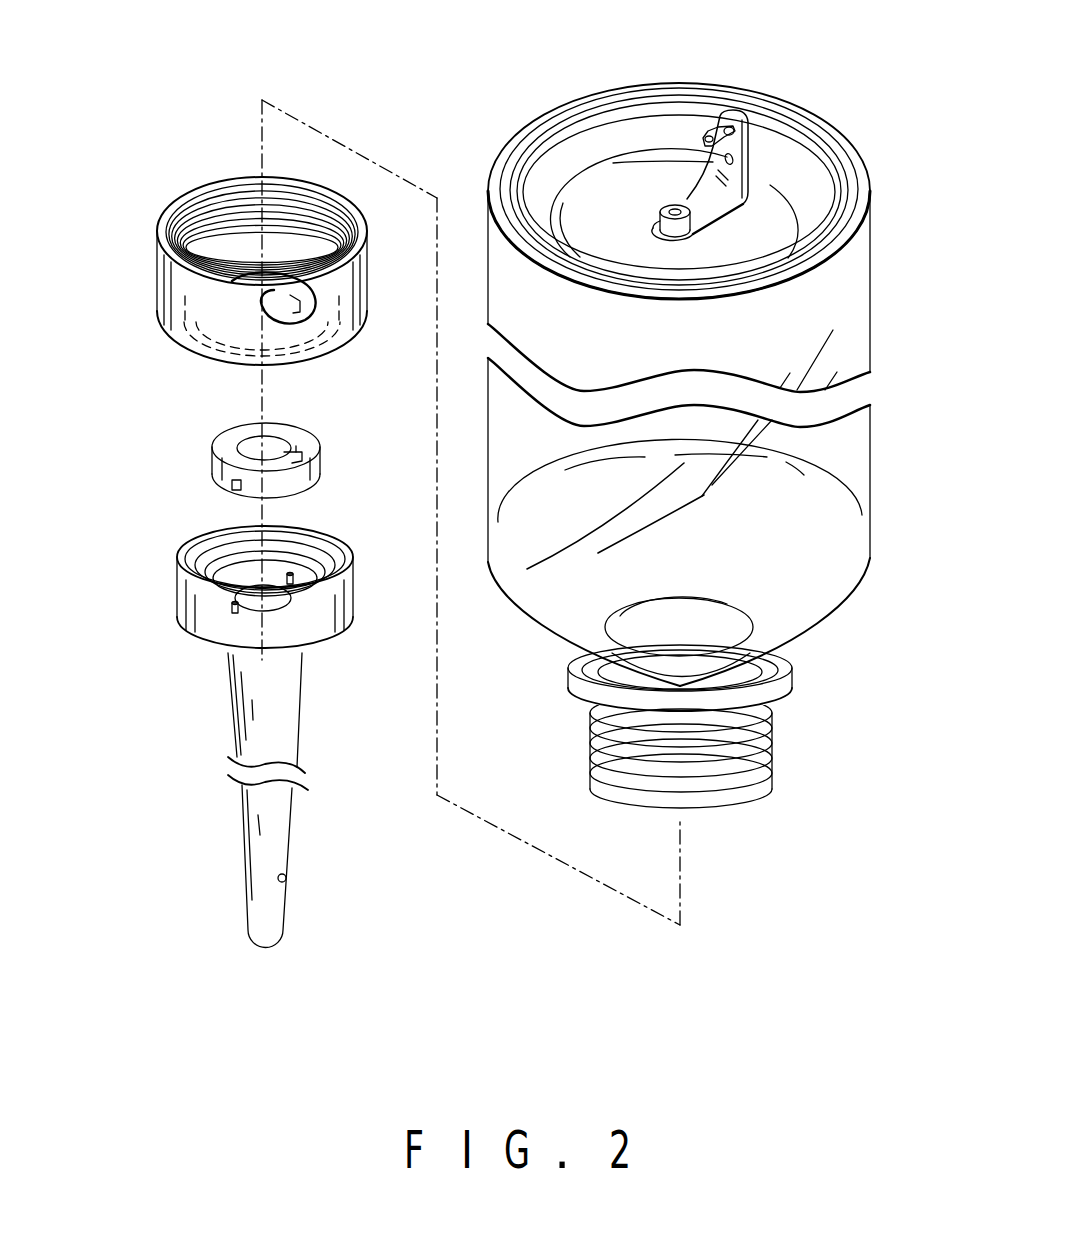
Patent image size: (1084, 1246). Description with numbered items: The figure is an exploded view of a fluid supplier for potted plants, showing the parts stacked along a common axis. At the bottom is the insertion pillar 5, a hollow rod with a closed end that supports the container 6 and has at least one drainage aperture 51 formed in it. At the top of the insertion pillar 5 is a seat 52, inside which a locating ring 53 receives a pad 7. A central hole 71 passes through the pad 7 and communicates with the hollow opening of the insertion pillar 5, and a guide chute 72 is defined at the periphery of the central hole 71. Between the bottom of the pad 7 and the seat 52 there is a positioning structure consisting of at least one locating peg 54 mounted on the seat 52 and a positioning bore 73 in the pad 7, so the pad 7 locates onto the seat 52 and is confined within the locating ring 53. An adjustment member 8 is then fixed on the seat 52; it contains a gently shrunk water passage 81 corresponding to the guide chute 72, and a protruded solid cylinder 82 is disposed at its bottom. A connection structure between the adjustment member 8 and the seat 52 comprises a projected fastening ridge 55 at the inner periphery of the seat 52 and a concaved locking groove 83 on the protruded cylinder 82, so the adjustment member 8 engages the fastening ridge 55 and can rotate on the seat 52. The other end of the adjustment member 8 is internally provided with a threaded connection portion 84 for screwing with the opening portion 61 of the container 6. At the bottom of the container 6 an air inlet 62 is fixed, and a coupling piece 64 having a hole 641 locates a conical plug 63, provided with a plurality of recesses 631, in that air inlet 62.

The insertion pillar 5 is at (257, 700).
The drainage aperture 51 is at (287, 877).
The seat 52 is at (189, 613).
The locating ring 53 is at (216, 575).
The locating peg 54 is at (296, 576).
The fastening ridge 55 is at (219, 547).
The container 6 is at (856, 307).
The opening portion 61 is at (714, 773).
The air inlet 62 is at (675, 212).
The conical plug 63 is at (711, 134).
The recesses 631 is at (728, 141).
The coupling piece 64 is at (718, 203).
The hole 641 is at (733, 160).
The pad 7 is at (226, 458).
The central hole 71 is at (253, 447).
The guide chute 72 is at (306, 473).
The positioning bore 73 is at (209, 481).
The adjustment member 8 is at (158, 272).
The water passage 81 is at (292, 300).
The protruded solid cylinder 82 is at (327, 350).
The locking groove 83 is at (290, 352).
The threaded connection portion 84 is at (207, 215).